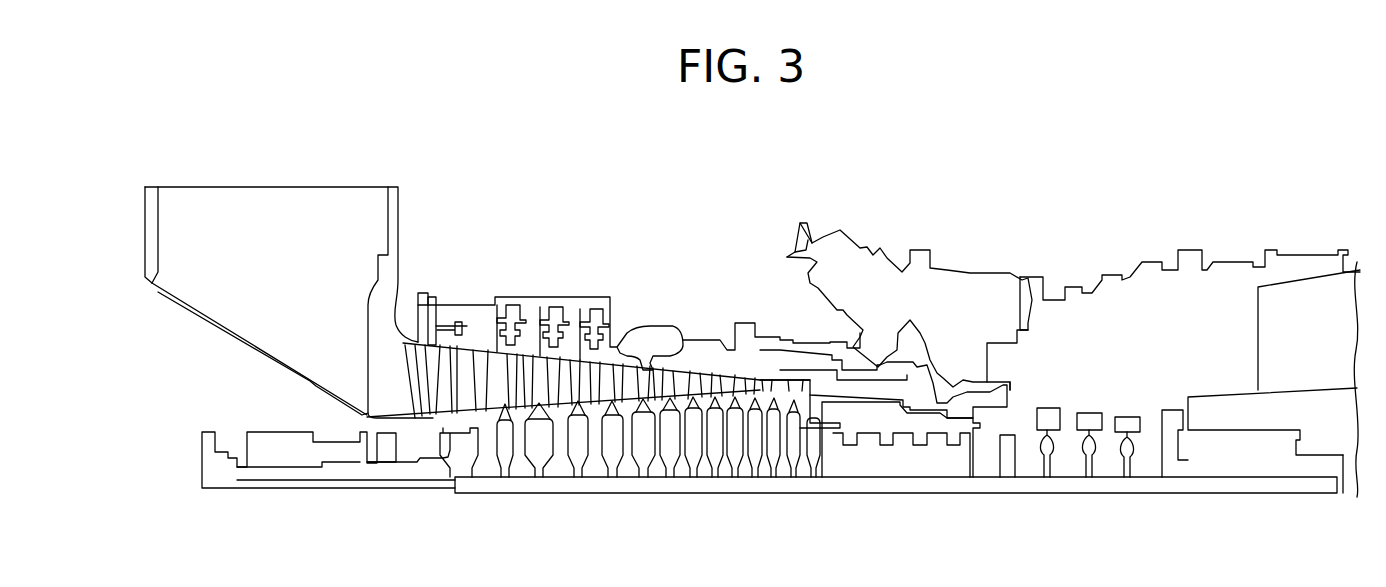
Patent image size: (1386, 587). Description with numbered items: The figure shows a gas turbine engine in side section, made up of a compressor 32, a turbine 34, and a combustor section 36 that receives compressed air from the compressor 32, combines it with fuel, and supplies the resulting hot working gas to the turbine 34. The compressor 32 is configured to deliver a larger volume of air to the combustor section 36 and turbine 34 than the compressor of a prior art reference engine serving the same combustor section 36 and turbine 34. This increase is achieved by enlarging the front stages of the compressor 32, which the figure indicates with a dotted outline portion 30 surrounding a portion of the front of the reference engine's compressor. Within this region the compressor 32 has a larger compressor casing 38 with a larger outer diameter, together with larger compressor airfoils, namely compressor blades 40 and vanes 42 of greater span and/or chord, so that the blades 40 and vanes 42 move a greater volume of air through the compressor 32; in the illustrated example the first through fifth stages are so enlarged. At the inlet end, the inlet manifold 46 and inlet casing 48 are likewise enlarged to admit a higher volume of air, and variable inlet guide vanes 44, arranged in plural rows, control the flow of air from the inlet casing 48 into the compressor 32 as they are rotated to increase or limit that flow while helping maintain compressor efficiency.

The dotted outline portion 30 is at (145, 222).
The compressor 32 is at (257, 355).
The turbine 34 is at (1150, 250).
The combustor section 36 is at (1010, 265).
The compressor casing 38 is at (560, 293).
The compressor blades 40 is at (562, 360).
The vanes 42 is at (577, 378).
The inlet guide vanes 44 is at (488, 374).
The inlet manifold 46 is at (280, 262).
The inlet casing 48 is at (400, 343).